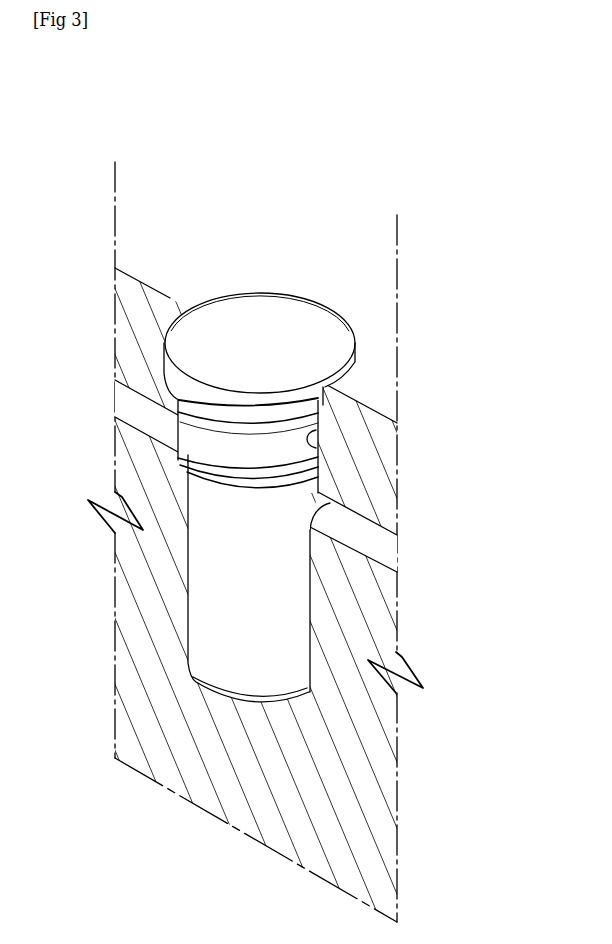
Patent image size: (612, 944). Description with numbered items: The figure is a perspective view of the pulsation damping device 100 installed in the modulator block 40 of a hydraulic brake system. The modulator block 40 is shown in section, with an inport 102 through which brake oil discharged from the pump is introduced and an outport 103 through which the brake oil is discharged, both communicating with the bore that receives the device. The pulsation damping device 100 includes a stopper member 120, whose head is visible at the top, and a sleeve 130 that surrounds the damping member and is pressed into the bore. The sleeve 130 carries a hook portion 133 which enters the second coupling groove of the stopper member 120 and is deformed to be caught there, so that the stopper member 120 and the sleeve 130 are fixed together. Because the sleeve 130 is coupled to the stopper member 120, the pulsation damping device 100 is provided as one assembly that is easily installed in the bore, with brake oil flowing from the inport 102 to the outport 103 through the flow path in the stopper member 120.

The modulator block 40 is at (390, 478).
The pulsation damping device 100 is at (180, 190).
The inport 102 is at (134, 406).
The outport 103 is at (390, 543).
The stopper member 120 is at (305, 322).
The sleeve 130 is at (188, 603).
The hook portion 133 is at (192, 467).